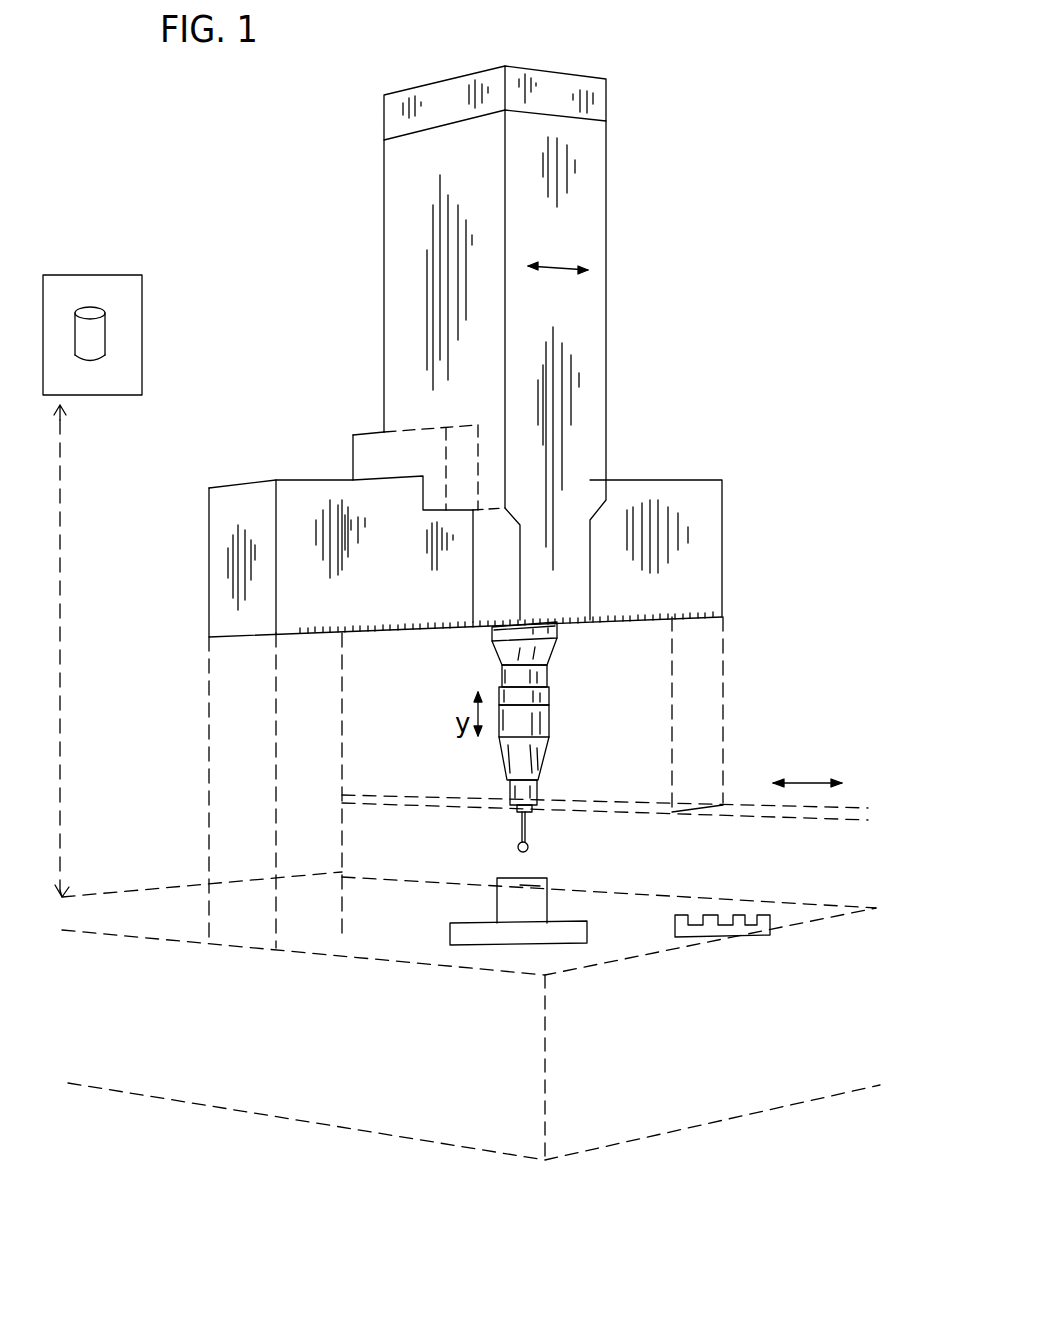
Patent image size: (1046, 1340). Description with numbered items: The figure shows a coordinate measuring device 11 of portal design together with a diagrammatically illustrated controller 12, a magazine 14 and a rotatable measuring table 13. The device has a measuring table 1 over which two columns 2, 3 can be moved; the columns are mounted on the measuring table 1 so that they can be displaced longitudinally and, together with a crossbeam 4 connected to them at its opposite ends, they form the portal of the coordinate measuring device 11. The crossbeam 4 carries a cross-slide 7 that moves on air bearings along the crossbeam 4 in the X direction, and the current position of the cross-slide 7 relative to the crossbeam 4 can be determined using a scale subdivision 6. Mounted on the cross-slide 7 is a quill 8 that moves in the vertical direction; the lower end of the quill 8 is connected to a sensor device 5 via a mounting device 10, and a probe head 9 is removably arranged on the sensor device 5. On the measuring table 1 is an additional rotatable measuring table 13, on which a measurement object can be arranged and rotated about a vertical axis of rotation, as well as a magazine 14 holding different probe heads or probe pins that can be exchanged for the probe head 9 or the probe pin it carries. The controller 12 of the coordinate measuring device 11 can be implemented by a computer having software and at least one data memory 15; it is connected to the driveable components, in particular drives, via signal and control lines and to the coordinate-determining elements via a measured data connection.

The measuring table 1 is at (128, 892).
The column 2 is at (726, 740).
The column 3 is at (209, 733).
The crossbeam 4 is at (246, 484).
The sensor device 5 is at (500, 740).
The scale subdivision 6 is at (641, 623).
The cross-slide 7 is at (382, 205).
The quill 8 is at (540, 631).
The probe head 9 is at (528, 795).
The mounting device 10 is at (498, 690).
The coordinate measuring device 11 is at (178, 1157).
The controller 12 is at (140, 395).
The rotatable measuring table 13 is at (474, 945).
The magazine 14 is at (700, 937).
The data memory 15 is at (93, 306).